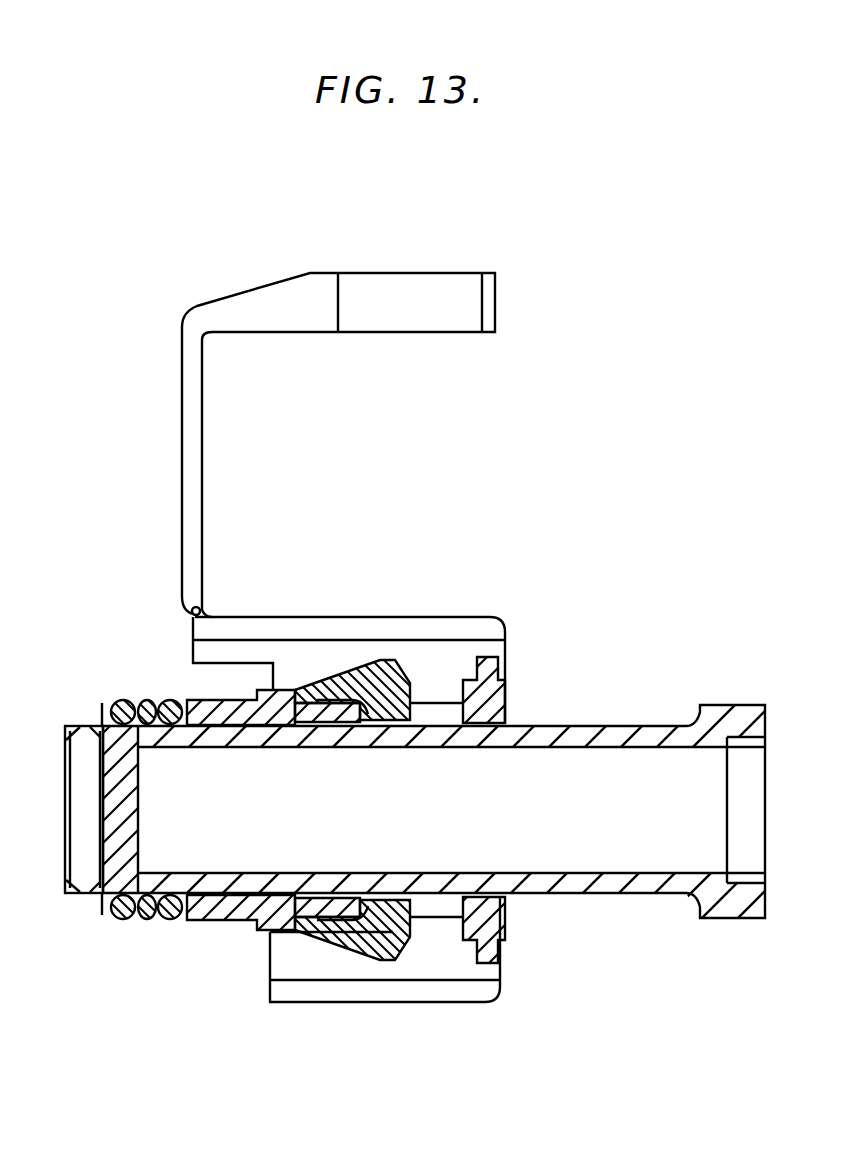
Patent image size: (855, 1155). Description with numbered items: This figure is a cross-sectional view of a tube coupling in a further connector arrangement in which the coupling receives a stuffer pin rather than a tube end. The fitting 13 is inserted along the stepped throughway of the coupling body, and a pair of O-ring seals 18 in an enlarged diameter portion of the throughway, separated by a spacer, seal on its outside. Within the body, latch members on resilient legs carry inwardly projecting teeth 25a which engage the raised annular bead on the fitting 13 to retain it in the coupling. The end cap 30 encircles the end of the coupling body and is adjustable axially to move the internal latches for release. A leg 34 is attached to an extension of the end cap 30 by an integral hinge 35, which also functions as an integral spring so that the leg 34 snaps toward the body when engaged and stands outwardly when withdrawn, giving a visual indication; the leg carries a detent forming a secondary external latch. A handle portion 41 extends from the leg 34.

The tube end fitting 13 is at (193, 888).
The O-ring seals 18 is at (152, 700).
The inwardly projecting teeth 25a is at (423, 887).
The end cap 30 is at (388, 635).
The leg 34 is at (198, 398).
The integral hinge 35 is at (185, 615).
The handle 41 is at (440, 297).